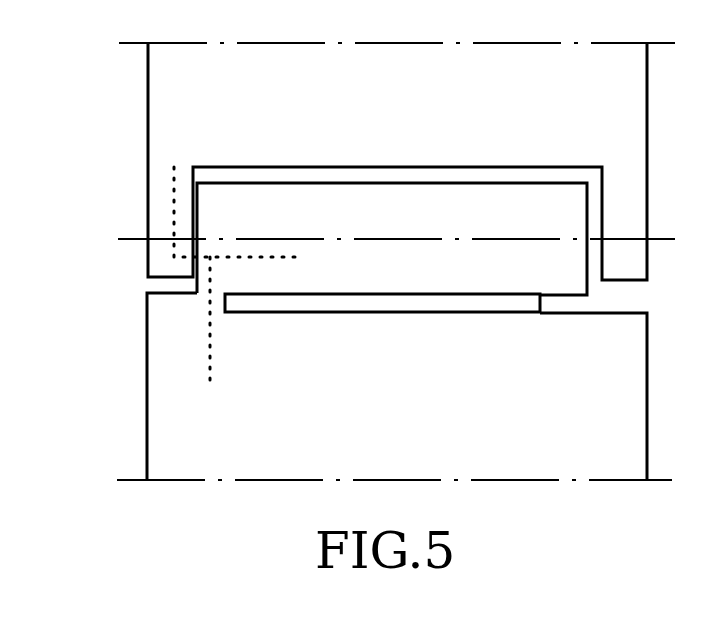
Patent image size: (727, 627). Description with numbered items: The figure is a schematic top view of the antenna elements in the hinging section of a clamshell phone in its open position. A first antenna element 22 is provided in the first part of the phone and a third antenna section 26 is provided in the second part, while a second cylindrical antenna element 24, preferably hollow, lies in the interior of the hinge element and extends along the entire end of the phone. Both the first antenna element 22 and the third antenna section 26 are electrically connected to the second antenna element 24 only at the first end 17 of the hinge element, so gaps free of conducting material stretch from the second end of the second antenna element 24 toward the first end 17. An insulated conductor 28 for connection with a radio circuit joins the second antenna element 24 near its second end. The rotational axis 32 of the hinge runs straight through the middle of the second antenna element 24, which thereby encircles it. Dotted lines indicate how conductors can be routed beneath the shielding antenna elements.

The first end of the hinge element 17 is at (145, 250).
The first antenna element 22 is at (165, 408).
The second cylindrical antenna element 24 is at (497, 208).
The third antenna section 26 is at (177, 104).
The insulated conductor 28 is at (542, 298).
The rotational axis 32 is at (137, 237).